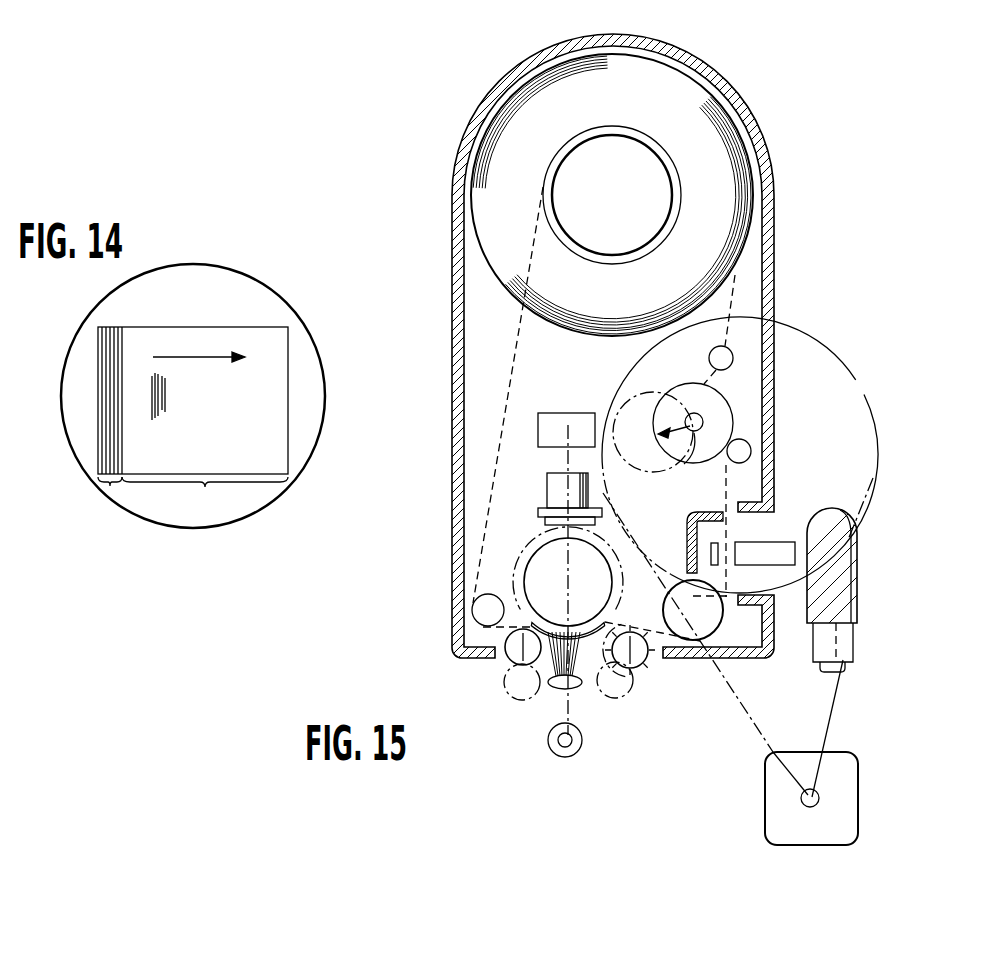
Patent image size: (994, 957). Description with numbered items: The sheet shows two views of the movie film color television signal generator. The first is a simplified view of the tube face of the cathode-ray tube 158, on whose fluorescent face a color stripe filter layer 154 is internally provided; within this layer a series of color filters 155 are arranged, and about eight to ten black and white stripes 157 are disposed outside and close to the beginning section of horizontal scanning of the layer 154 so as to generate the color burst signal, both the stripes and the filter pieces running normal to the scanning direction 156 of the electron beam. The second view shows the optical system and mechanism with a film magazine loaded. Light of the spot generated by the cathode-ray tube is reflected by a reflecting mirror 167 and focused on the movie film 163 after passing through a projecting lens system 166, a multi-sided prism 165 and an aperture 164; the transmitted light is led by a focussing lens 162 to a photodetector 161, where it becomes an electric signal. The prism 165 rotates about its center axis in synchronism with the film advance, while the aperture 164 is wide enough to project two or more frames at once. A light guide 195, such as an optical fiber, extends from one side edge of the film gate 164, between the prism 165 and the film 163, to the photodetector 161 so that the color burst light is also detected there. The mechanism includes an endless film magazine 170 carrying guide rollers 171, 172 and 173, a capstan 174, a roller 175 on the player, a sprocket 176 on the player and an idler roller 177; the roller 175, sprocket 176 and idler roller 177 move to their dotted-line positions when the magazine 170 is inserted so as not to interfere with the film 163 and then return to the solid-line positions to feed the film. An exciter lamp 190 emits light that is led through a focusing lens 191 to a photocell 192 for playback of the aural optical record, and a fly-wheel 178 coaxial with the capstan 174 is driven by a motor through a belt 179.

In FIG. 14, the color stripe filter layer 154 is at (205, 487).
In FIG. 14, the color filters 155 is at (225, 445).
In FIG. 14, the scanning direction 156 is at (217, 362).
In FIG. 14, the black and white stripes 157 is at (110, 486).
In FIG. 14, the cathode-ray tube 158 is at (285, 298).
In FIG. 15, the photodetector 161 is at (577, 743).
In FIG. 15, the focussing lens 162 is at (573, 688).
In FIG. 15, the movie film 163 is at (740, 280).
In FIG. 15, the aperture 164 is at (543, 630).
In FIG. 15, the multi-sided prism 165 is at (600, 578).
In FIG. 15, the projecting lens system 166 is at (552, 490).
In FIG. 15, the reflecting mirror 167 is at (560, 425).
In FIG. 15, the endless film magazine 170 is at (774, 220).
In FIG. 15, the guide roller 171 is at (473, 608).
In FIG. 15, the guide roller 172 is at (706, 618).
In FIG. 15, the guide roller 173 is at (727, 349).
In FIG. 15, the capstan 174 is at (750, 450).
In FIG. 15, the roller 175 is at (507, 660).
In FIG. 15, the sprocket 176 is at (650, 656).
In FIG. 15, the idler roller 177 is at (718, 412).
In FIG. 15, the fly-wheel 178 is at (862, 380).
In FIG. 15, the belt 179 is at (744, 712).
In FIG. 15, the exciter lamp 190 is at (840, 568).
In FIG. 15, the focusing lens 191 is at (767, 552).
In FIG. 15, the photocell 192 is at (712, 548).
In FIG. 15, the light guide 195 is at (553, 693).